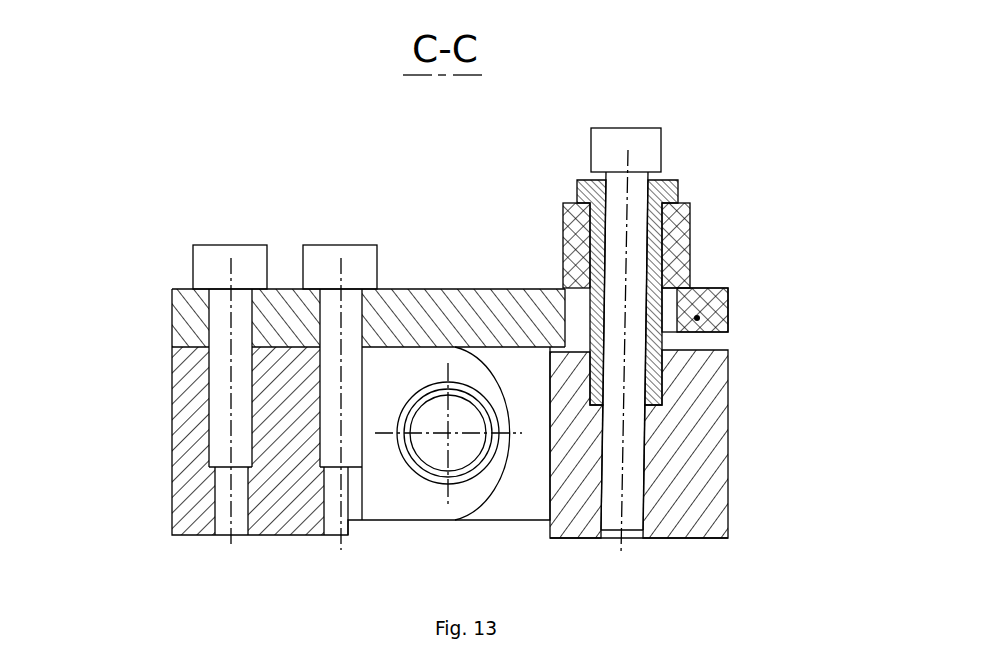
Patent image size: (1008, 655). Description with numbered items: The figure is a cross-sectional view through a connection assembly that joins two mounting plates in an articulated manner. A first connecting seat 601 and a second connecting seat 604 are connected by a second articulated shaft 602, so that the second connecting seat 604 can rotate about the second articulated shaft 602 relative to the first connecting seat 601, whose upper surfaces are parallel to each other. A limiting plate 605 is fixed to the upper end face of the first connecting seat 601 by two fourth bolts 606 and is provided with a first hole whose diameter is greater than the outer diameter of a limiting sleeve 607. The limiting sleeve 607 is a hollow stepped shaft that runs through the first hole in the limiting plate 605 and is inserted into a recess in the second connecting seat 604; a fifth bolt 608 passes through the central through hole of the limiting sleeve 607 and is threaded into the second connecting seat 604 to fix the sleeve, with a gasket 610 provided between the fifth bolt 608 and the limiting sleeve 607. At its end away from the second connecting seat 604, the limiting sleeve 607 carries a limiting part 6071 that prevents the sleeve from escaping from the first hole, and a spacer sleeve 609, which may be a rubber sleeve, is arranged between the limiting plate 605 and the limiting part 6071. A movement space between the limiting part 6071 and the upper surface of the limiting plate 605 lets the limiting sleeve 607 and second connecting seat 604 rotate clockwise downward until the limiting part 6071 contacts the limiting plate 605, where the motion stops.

The first connecting seat 601 is at (188, 430).
The second articulated shaft 602 is at (434, 423).
The second connecting seat 604 is at (697, 445).
The limiting plate 605 is at (730, 288).
The fourth bolt 606 is at (212, 264).
The limiting sleeve 607 is at (662, 193).
The limiting part 6071 is at (680, 200).
The fifth bolt 608 is at (643, 142).
The spacer sleeve 609 is at (566, 255).
The gasket 610 is at (593, 178).